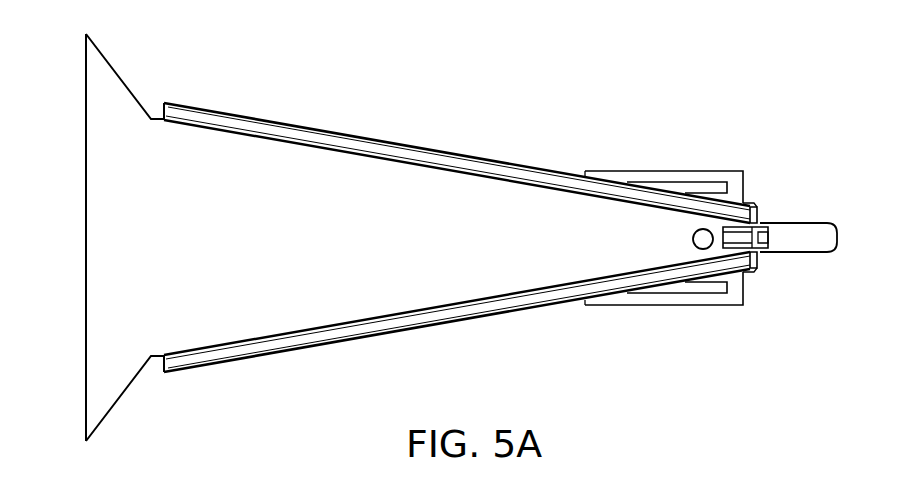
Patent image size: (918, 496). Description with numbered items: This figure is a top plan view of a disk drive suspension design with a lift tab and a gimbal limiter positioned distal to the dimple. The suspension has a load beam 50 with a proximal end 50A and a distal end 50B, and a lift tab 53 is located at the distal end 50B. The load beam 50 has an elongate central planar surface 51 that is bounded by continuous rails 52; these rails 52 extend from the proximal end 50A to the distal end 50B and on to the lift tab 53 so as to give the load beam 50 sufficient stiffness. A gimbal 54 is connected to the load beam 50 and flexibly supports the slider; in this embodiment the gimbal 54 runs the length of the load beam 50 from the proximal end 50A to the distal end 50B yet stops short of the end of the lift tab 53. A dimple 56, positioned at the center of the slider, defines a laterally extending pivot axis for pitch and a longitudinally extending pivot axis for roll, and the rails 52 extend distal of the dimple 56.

The load beam 50 is at (377, 126).
The proximal end 50A is at (76, 251).
The distal end 50B is at (773, 279).
The elongate central planar surface 51 is at (240, 246).
The continuous rails 52 is at (296, 125).
The lift tab 53 is at (818, 236).
The gimbal 54 is at (664, 307).
The dimple 56 is at (696, 229).